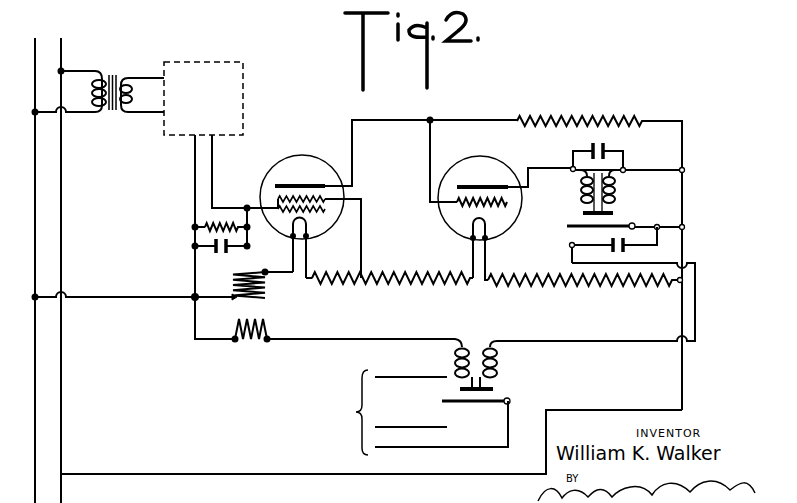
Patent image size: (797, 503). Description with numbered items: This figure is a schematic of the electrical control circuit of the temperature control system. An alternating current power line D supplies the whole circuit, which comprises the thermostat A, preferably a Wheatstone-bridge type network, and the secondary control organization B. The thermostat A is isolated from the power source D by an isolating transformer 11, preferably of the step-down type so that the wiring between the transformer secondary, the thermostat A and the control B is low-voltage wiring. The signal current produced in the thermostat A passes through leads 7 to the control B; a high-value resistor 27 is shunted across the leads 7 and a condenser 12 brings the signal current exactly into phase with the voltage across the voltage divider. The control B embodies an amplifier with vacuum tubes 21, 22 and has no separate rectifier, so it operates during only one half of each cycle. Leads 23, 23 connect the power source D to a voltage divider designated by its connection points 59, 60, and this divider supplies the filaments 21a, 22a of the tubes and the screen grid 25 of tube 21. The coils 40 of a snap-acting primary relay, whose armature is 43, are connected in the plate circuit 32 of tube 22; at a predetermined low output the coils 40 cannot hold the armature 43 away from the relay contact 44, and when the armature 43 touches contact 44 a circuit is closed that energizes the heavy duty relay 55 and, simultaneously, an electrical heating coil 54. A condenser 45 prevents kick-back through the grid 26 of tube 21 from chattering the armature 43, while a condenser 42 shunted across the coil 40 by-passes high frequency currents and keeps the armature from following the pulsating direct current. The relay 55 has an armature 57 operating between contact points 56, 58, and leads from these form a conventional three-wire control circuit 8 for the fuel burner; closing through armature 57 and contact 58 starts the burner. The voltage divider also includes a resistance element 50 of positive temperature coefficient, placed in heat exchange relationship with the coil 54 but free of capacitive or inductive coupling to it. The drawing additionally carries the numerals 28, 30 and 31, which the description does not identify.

The leads 7 is at (212, 167).
The three wire control circuit 8 is at (355, 414).
The isolating transformer 11 is at (115, 71).
The condenser 12 is at (213, 252).
The vacuum tube 21 is at (303, 156).
The vacuum tube filament 21a is at (306, 230).
The vacuum tube 22 is at (500, 165).
The vacuum tube filament 22a is at (487, 230).
The leads 23 is at (100, 296).
The screen grid 25 is at (361, 218).
The grid 26 is at (280, 203).
The high-value resistor 27 is at (207, 225).
The plate of tube 21 28 is at (287, 183).
The grid coil of tube 22 30 is at (465, 212).
The plate resistor 31 is at (615, 118).
The plate circuit 32 is at (545, 168).
The coils of primary relay 40 is at (582, 194).
The condenser 42 is at (607, 146).
The armature 43 is at (612, 225).
The relay contact 44 is at (571, 240).
The condenser 45 is at (625, 254).
The electrical resistance element 50 is at (240, 273).
The electrical heating coil 54 is at (268, 333).
The heavy duty relay 55 is at (504, 379).
The electrical contact point 56 is at (447, 415).
The armature 57 is at (472, 407).
The electrical contact point 58 is at (447, 390).
The point of connection of voltage divider 59 is at (193, 300).
The point of connection of voltage divider 60 is at (690, 282).
The thermostat A is at (247, 103).
The control organization B is at (498, 112).
The alternating current power line D is at (30, 265).